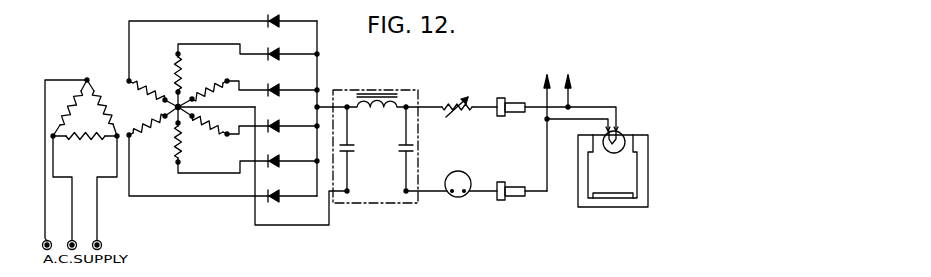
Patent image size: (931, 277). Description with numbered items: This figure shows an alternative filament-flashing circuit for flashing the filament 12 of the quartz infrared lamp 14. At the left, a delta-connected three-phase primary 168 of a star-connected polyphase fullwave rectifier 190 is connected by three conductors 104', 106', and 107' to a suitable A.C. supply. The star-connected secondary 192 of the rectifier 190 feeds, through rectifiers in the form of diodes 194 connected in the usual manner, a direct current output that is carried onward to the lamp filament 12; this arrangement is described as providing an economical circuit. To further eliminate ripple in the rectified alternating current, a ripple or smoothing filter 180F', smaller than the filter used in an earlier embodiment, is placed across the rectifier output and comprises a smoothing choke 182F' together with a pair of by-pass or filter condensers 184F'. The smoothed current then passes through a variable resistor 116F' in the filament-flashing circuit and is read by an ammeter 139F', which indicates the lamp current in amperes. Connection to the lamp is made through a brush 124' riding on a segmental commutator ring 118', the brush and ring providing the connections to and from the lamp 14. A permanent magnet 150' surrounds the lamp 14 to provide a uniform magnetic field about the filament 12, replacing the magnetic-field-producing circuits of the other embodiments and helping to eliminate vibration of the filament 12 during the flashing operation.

The delta-connected resistor network 168 is at (88, 78).
The conductor 104' is at (65, 165).
The conductor 106' is at (75, 193).
The conductor 107' is at (108, 193).
The star-connected secondary 192 is at (168, 70).
The diodes 194 is at (274, 84).
The star-connected polyphase fullwave rectifier 190 is at (239, 204).
The ripple or smoothing filter 180F' is at (399, 135).
The smoothing choke 182F' is at (376, 109).
The by-pass or filter condensers 184F' is at (376, 150).
The variable resistor 116F' is at (451, 115).
The ammeter 139F' is at (451, 200).
The segmental commutator ring 118' is at (491, 149).
The brush 124' is at (560, 149).
The quartz infrared lamp 14 is at (625, 141).
The filament 12 is at (611, 153).
The permanent magnet 150' is at (645, 191).